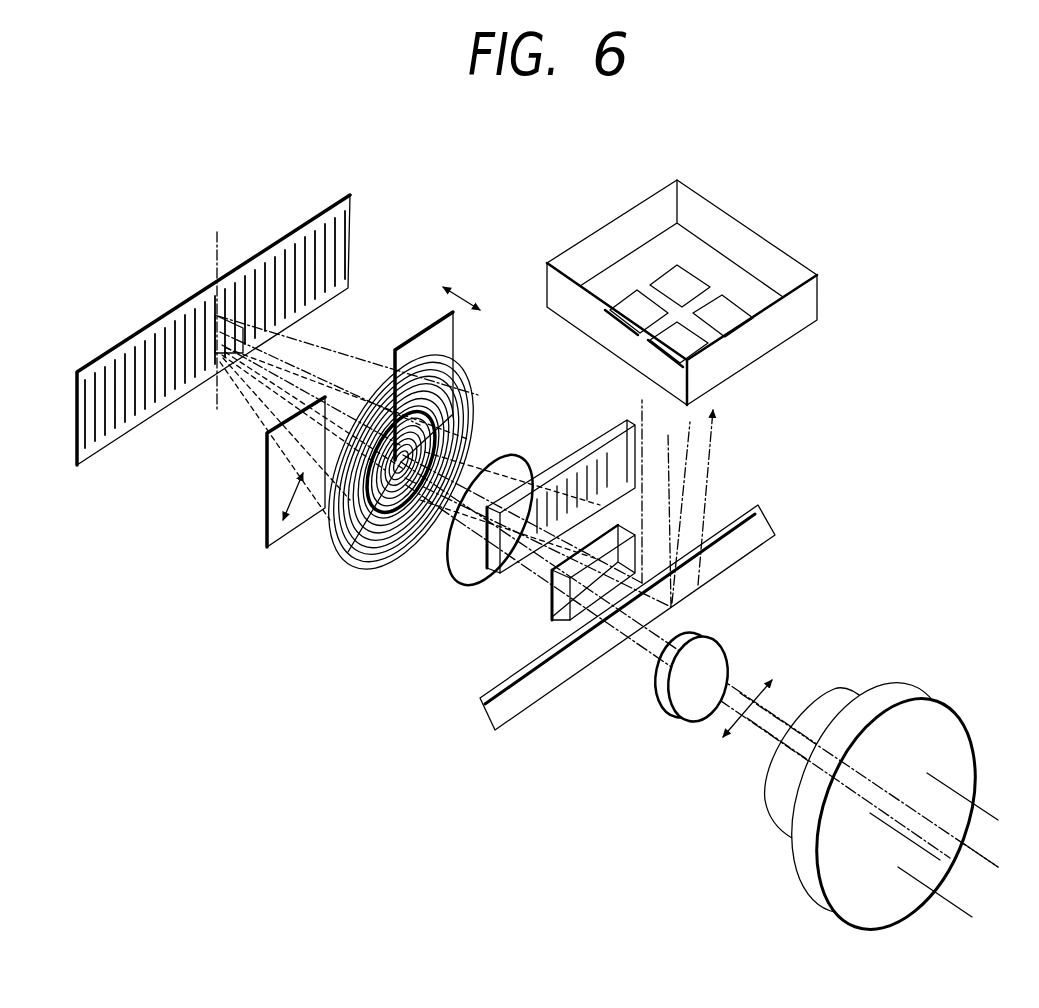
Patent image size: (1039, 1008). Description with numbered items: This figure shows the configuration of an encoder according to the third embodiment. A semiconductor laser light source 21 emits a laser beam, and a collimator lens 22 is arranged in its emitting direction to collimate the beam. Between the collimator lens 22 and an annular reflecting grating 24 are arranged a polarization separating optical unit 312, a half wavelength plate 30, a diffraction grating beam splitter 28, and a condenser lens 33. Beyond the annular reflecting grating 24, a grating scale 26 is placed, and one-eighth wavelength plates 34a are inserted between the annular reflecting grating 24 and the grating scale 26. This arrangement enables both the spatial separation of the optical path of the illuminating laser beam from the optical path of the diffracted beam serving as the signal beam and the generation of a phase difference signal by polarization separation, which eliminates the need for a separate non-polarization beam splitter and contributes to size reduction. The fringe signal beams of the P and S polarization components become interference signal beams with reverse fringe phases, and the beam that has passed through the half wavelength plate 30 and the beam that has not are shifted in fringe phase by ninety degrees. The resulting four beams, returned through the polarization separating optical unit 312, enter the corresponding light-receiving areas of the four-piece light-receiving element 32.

The semiconductor laser light source 21 is at (940, 698).
The collimator lens 22 is at (688, 735).
The annular reflecting grating 24 is at (357, 552).
The grating scale 26 is at (183, 298).
The diffraction grating beam splitter 28 is at (590, 447).
The half wavelength plate 30 is at (553, 603).
The four-piece light-receiving element 32 is at (747, 222).
The condenser lens 33 is at (457, 580).
The one-eighth wavelength plate 34a is at (423, 332).
The polarization separating optical unit 312 is at (758, 528).